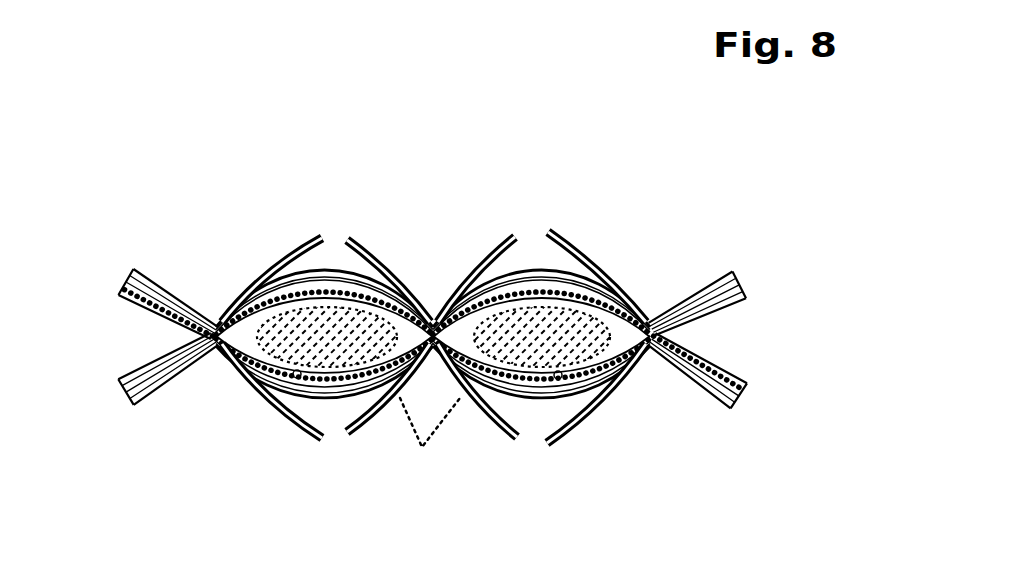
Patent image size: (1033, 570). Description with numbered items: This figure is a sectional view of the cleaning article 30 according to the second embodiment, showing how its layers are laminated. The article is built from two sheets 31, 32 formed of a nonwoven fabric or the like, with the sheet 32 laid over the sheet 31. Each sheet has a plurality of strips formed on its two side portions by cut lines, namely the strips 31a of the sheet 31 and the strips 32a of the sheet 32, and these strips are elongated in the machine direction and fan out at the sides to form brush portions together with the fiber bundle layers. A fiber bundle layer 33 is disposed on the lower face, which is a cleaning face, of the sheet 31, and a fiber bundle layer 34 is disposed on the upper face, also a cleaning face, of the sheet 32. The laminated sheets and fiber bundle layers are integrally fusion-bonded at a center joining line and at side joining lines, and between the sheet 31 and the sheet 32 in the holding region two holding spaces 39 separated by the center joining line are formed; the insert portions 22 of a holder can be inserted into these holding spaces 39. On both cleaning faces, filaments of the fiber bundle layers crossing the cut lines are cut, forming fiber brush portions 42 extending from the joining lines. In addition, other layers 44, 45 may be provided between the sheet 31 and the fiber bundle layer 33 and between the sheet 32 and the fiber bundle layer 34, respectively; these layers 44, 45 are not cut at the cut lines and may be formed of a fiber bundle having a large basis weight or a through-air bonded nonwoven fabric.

The cleaning article 30 is at (683, 192).
The sheet 31 is at (337, 400).
The strips 31a is at (123, 370).
The sheet 32 is at (521, 277).
The strips 32a is at (122, 299).
The fiber bundle layer 33 is at (162, 398).
The fiber bundle layer 34 is at (160, 278).
The holding spaces 39 is at (296, 378).
The fiber brush portions 42 is at (288, 245).
The layer 44 is at (527, 394).
The layer 45 is at (537, 270).
The insert portions 22 is at (430, 438).